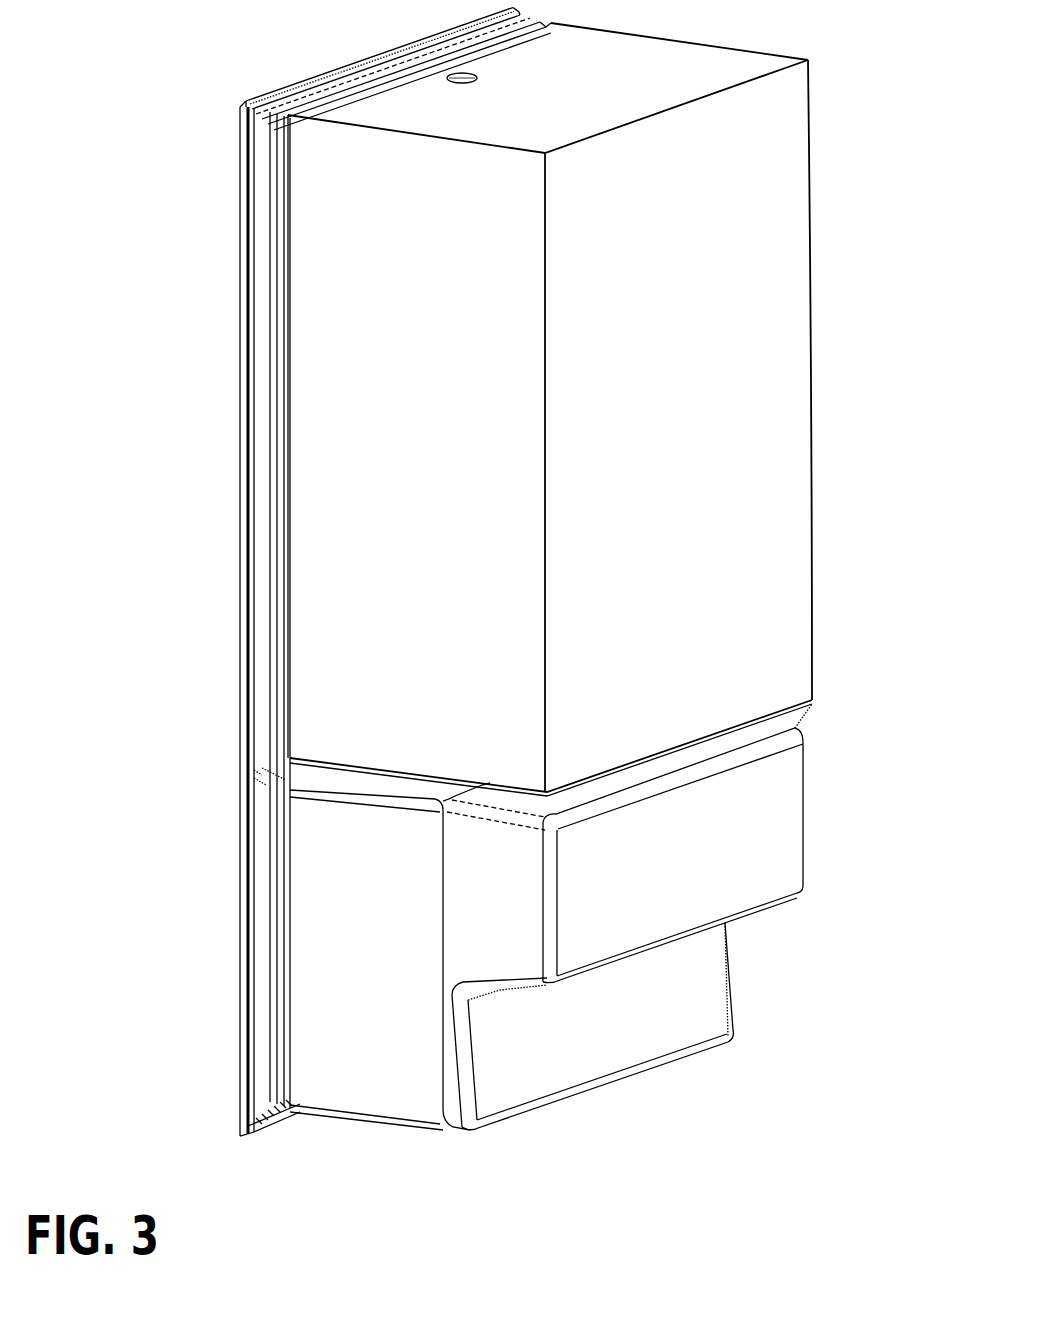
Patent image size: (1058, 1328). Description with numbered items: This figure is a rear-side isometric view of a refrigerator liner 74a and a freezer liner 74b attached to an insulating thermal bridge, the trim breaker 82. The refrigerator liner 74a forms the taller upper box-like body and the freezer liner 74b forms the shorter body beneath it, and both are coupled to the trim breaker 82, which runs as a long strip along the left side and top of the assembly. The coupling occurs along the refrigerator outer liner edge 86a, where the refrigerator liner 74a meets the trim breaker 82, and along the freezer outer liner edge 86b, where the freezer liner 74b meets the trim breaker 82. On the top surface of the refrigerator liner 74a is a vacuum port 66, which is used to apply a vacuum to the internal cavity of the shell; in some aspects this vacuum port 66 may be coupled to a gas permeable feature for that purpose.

The refrigerator liner 74a is at (744, 440).
The freezer liner 74b is at (738, 832).
The trim breaker 82 is at (351, 73).
The vacuum port 66 is at (460, 73).
The refrigerator outer liner edge 86a is at (287, 461).
The freezer outer liner edge 86b is at (287, 862).